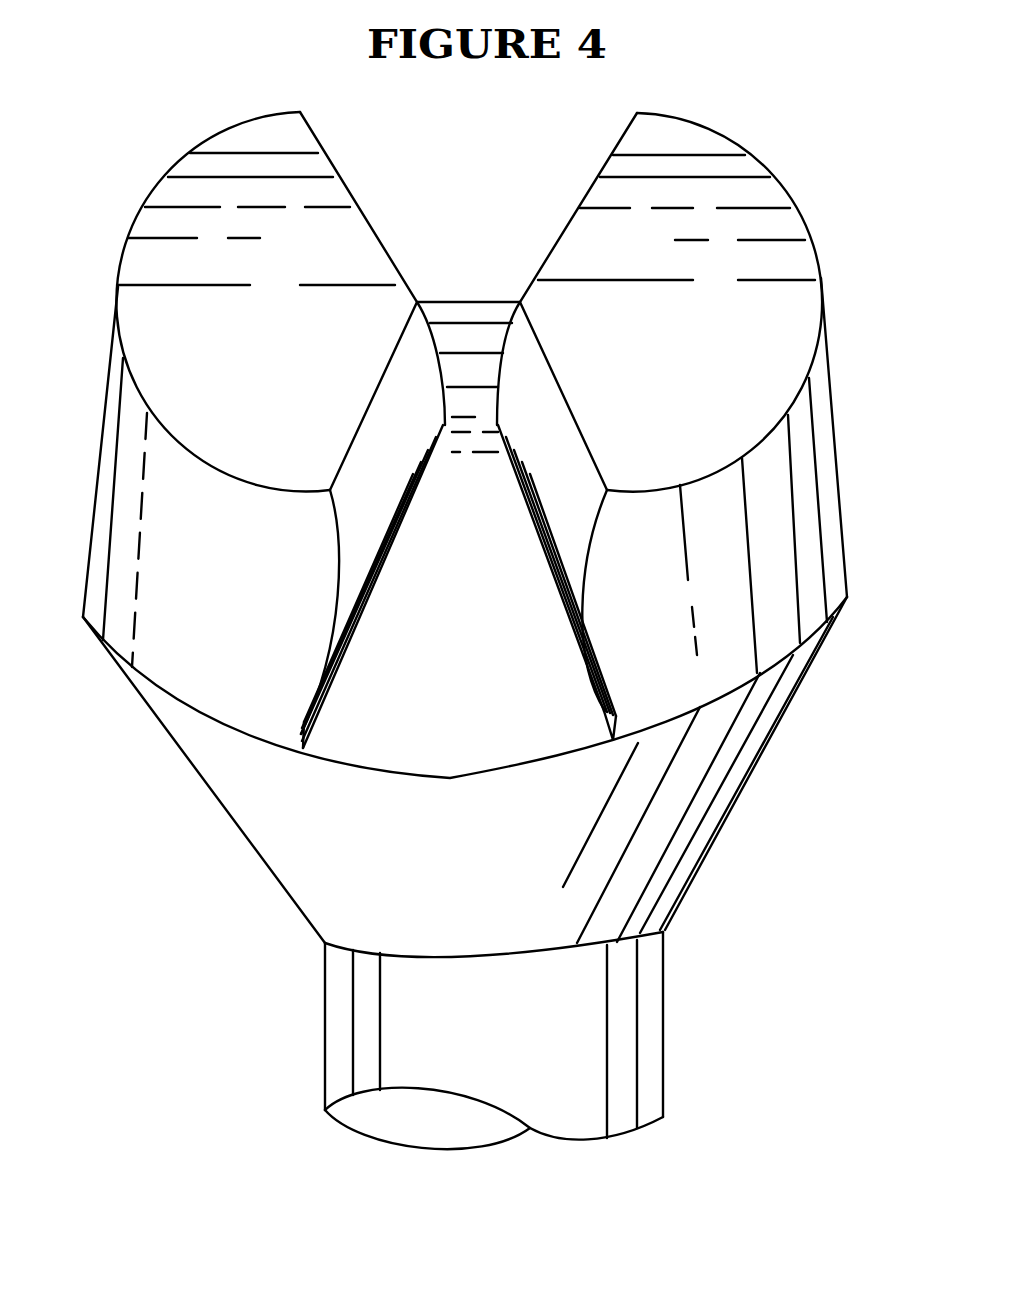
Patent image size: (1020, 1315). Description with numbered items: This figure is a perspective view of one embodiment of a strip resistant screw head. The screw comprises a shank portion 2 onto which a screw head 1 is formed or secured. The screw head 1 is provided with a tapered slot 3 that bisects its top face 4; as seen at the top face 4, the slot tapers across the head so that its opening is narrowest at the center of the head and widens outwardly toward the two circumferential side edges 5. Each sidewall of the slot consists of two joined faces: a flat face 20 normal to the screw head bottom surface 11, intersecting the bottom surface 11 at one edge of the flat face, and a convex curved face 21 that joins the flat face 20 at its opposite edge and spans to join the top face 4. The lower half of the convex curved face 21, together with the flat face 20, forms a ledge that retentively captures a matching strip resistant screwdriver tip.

The screw head 1 is at (760, 672).
The shank portion 2 is at (650, 1043).
The tapered slot 3 is at (472, 180).
The top face 4 is at (153, 317).
The circumferential side edges 5 is at (125, 493).
The screw head bottom surface 11 is at (447, 748).
The flat face 20 is at (593, 703).
The convex curved face 21 is at (350, 510).